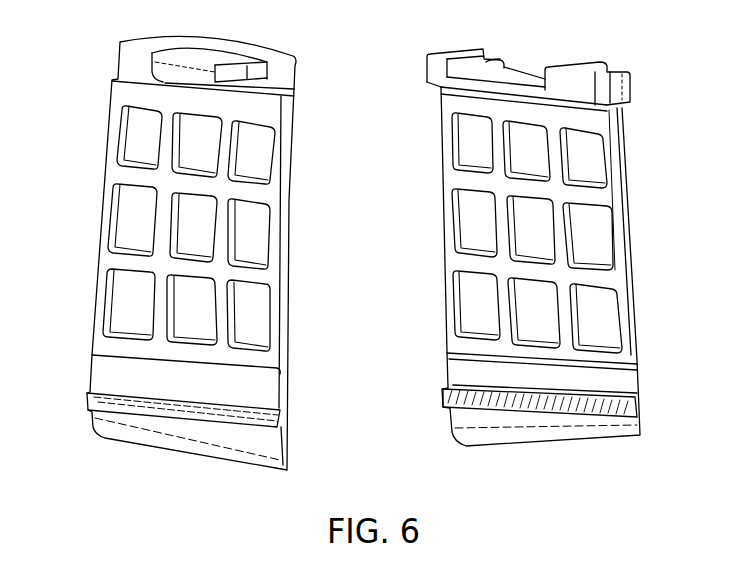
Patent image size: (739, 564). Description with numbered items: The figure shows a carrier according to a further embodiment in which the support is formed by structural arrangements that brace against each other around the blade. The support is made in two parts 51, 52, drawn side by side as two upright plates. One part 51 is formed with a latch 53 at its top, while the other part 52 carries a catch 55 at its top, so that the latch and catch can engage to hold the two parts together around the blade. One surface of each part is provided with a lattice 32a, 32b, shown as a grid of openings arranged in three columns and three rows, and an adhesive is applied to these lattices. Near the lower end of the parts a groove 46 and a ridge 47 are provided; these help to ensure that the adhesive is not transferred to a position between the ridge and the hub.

The support part 51 is at (272, 195).
The latch 53 is at (223, 62).
The lattice 32a is at (125, 238).
The support part 52 is at (608, 195).
The catch 55 is at (517, 72).
The lattice 32b is at (598, 230).
The groove 46 is at (622, 387).
The ridge 47 is at (628, 413).